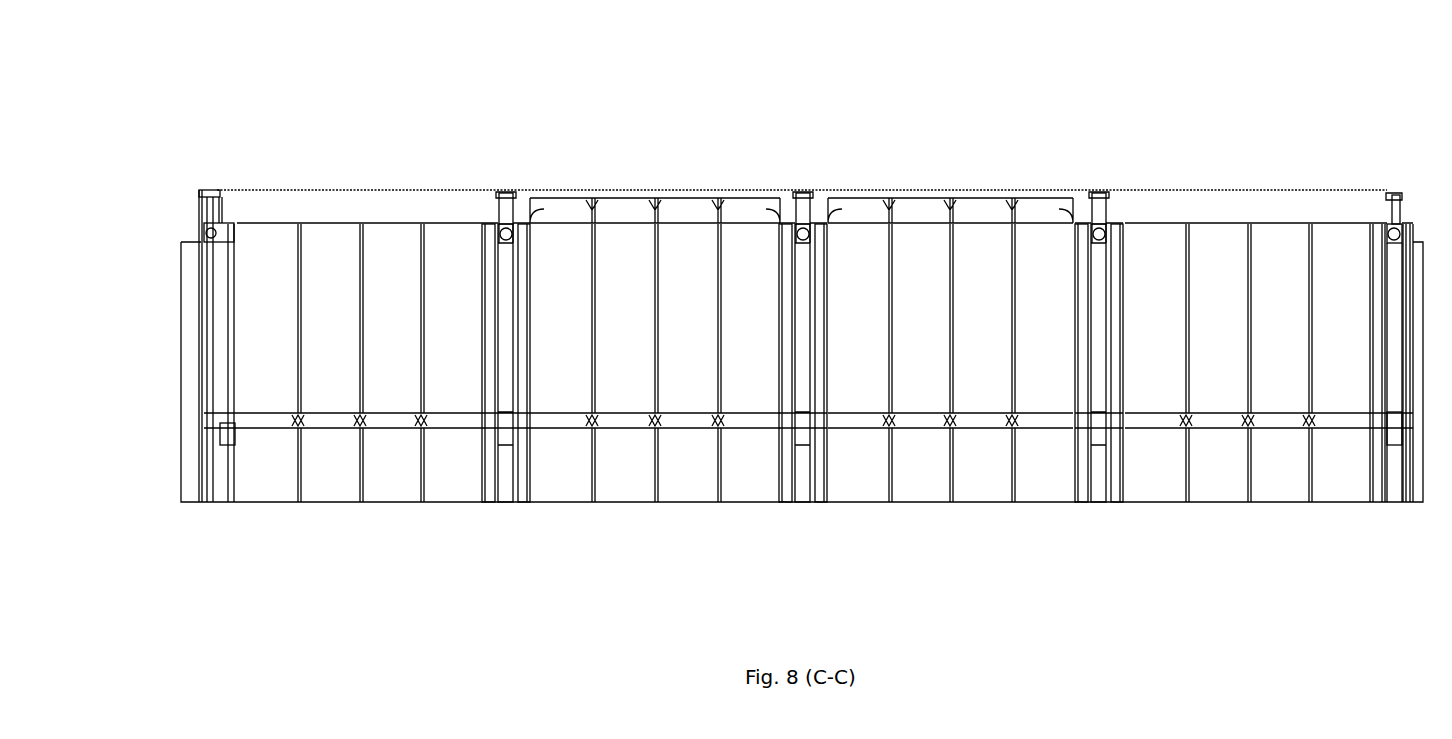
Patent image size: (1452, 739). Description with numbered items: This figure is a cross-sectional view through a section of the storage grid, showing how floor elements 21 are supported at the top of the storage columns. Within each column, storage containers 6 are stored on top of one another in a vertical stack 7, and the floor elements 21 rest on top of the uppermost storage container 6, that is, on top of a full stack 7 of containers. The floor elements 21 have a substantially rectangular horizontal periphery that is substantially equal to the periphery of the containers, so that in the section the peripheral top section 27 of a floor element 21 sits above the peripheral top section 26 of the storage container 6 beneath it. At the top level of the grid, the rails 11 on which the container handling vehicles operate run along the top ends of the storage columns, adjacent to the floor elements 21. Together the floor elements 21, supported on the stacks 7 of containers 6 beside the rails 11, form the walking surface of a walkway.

The storage container 6 is at (290, 303).
The vertical stack 7 is at (358, 508).
The rail 11 is at (1103, 198).
The floor element 21 is at (660, 212).
The peripheral top section of a storage container 26 is at (223, 223).
The peripheral top section of a floor element 27 is at (521, 192).